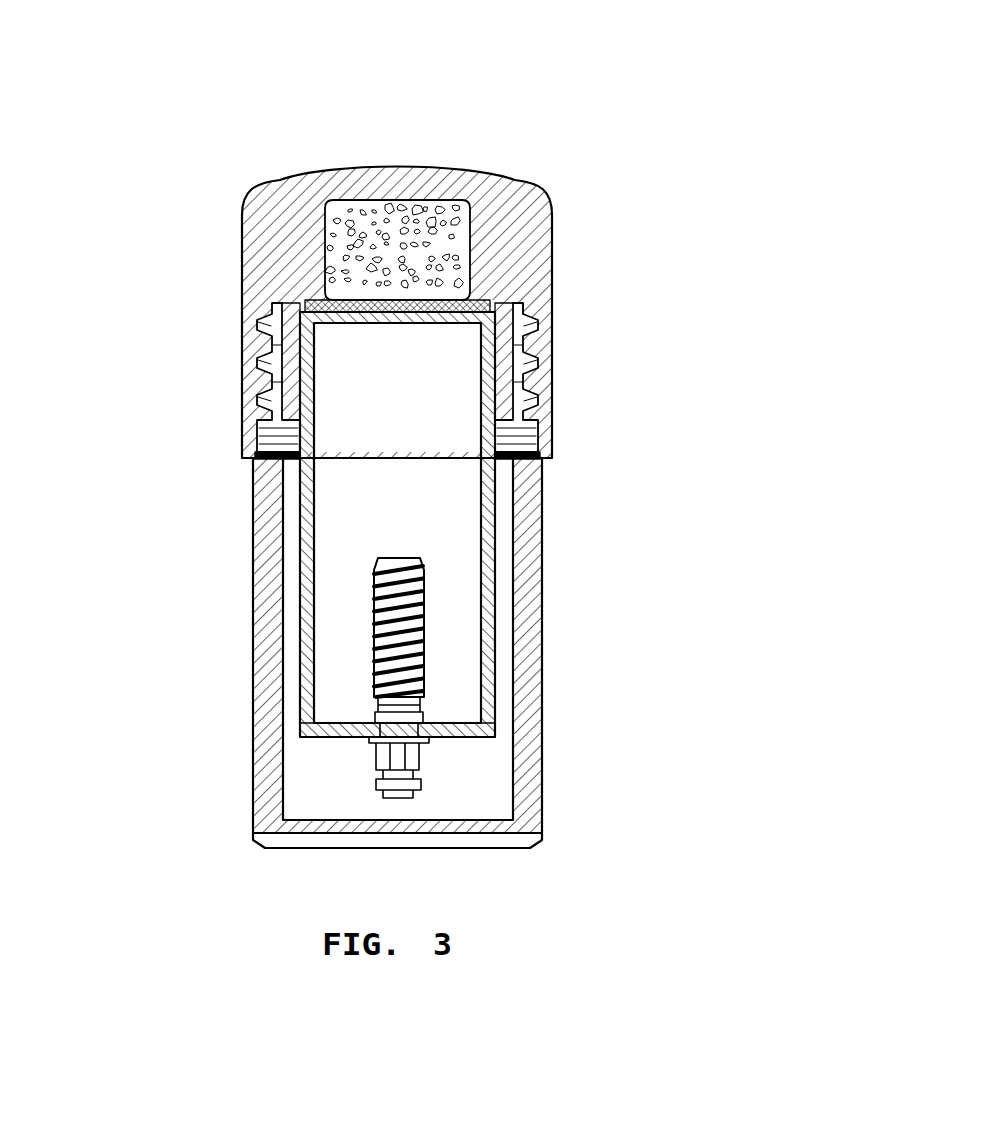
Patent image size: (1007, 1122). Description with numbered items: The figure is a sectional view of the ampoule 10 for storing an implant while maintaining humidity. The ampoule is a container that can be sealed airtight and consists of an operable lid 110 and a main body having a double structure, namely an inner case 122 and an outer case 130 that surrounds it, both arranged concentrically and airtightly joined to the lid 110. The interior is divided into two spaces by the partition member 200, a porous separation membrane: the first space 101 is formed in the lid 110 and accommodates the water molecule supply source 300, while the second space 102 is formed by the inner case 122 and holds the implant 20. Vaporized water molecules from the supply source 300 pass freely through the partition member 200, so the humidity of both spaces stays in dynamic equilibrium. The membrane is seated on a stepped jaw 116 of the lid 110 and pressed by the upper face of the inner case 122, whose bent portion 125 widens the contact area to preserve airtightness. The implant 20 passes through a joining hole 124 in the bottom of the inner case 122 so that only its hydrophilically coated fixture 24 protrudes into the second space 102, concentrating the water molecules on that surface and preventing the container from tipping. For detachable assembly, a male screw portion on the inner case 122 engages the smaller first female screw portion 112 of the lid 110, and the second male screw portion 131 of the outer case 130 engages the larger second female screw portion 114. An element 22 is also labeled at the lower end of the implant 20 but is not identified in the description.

The ampoule 10 is at (598, 92).
The first space 101 is at (320, 196).
The lid 110 is at (549, 203).
The water molecule supply source 300 is at (460, 232).
The partition member 200 is at (320, 299).
The stepped jaw 116 is at (498, 303).
The second female screw portion 114 is at (266, 324).
The bent portion 125 is at (522, 322).
The first female screw portion 112 is at (522, 345).
The second male screw portion 131 is at (265, 449).
The outer case 130 is at (266, 558).
The second space 102 is at (449, 508).
The inner case 122 is at (486, 552).
The joining hole 124 is at (462, 740).
The implant 20 is at (443, 675).
The fixture 24 is at (428, 615).
The fixing nut 22 is at (418, 762).